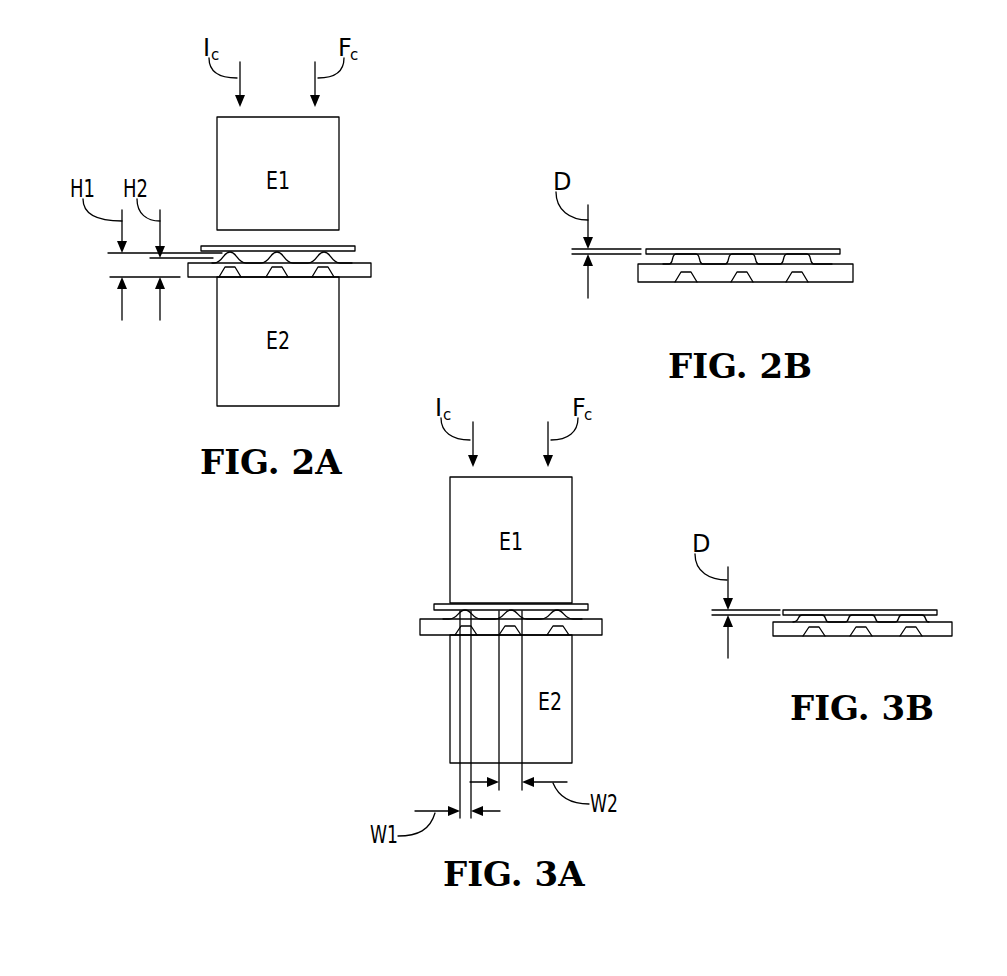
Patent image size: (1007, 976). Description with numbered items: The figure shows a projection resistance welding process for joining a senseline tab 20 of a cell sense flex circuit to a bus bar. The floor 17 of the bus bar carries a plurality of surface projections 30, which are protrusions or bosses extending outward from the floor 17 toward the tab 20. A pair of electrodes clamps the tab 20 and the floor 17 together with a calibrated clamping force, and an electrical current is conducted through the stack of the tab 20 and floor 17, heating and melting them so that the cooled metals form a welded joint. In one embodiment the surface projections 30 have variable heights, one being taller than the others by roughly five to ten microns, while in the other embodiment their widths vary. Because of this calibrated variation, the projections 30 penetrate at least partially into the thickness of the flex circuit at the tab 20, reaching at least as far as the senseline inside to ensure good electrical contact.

In FIG. 2A, the floor 17 is at (207, 270).
In FIG. 2B, the floor 17 is at (648, 272).
In FIG. 3A, the floor 17 is at (511, 627).
In FIG. 3B, the floor 17 is at (782, 628).
In FIG. 2A, the tab 20 is at (353, 246).
In FIG. 2B, the tab 20 is at (828, 249).
In FIG. 3A, the tab 20 is at (580, 604).
In FIG. 3B, the tab 20 is at (930, 611).
In FIG. 2A, the surface projections 30 is at (277, 256).
In FIG. 2B, the surface projections 30 is at (798, 252).
In FIG. 3A, the surface projections 30 is at (463, 612).
In FIG. 3B, the surface projections 30 is at (907, 617).